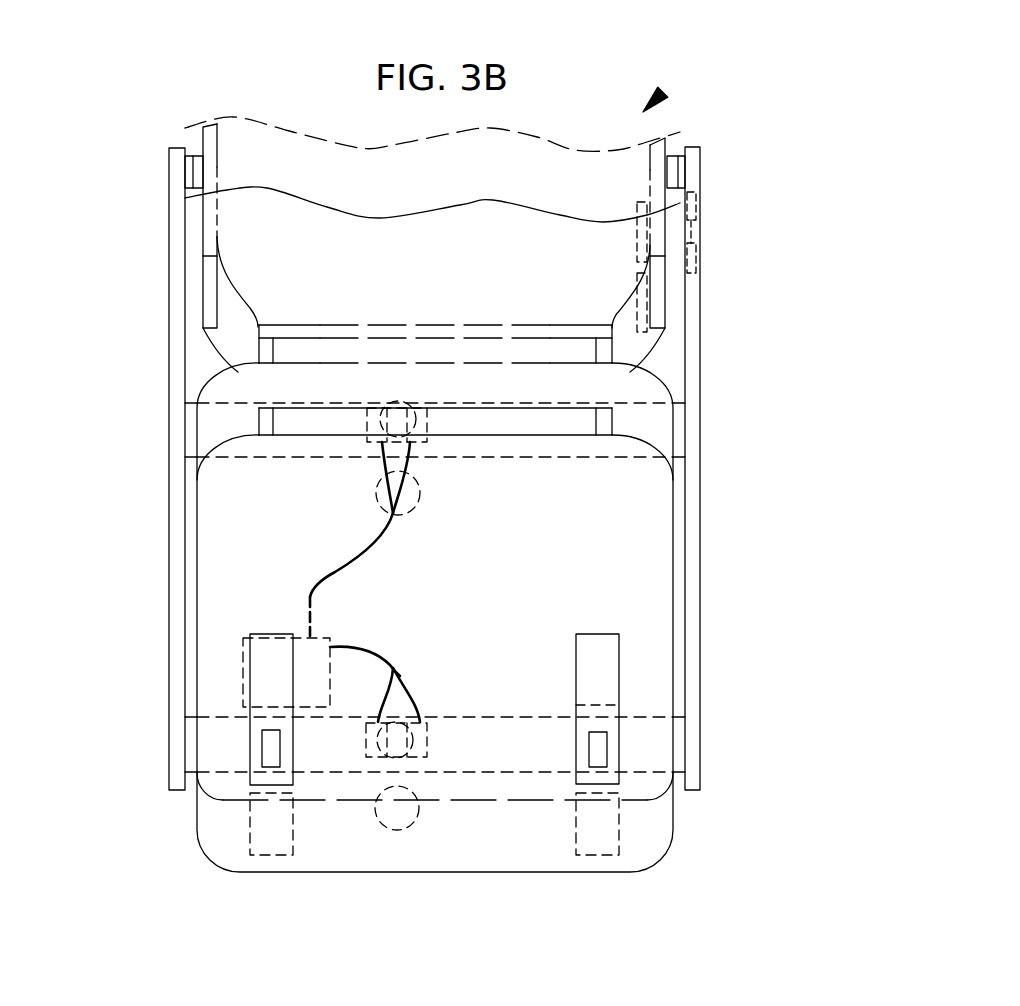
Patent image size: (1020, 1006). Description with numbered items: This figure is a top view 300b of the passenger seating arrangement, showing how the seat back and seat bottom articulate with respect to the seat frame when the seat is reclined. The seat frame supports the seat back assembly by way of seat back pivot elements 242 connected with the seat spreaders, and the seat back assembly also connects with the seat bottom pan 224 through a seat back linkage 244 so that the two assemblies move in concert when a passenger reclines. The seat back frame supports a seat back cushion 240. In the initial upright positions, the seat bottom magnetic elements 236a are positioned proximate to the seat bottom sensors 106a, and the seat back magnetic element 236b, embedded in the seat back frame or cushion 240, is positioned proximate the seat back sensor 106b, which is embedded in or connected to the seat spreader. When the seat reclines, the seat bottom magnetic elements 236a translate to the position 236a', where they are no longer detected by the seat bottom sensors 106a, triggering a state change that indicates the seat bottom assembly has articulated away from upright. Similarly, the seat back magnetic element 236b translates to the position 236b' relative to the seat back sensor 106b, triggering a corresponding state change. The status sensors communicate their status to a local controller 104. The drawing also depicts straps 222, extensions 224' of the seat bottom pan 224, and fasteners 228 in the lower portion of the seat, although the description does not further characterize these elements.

The top view 300b is at (665, 92).
The seat back pivot elements 242 is at (188, 170).
The seat back linkage 244 is at (253, 350).
The straps 222 is at (190, 425).
The seat back cushion 240 is at (613, 552).
The local controller 104 is at (243, 668).
The seat bottom pan 224 is at (359, 731).
The bracket extensions 224' is at (359, 846).
The fasteners 228 is at (607, 750).
The seat bottom magnetic elements 236a is at (376, 582).
The seat bottom sensors 106a is at (427, 427).
The translated position of seat bottom magnetic elements 236a' is at (455, 654).
The seat back magnetic element 236b is at (586, 246).
The translated position of seat back magnetic element 236b' is at (701, 318).
The seat back sensor 106b is at (699, 205).